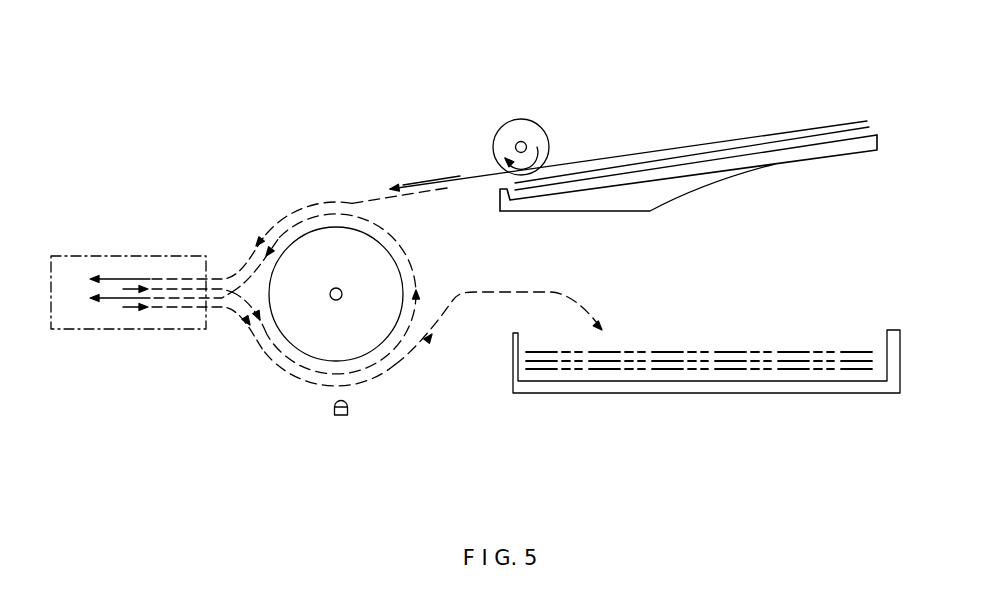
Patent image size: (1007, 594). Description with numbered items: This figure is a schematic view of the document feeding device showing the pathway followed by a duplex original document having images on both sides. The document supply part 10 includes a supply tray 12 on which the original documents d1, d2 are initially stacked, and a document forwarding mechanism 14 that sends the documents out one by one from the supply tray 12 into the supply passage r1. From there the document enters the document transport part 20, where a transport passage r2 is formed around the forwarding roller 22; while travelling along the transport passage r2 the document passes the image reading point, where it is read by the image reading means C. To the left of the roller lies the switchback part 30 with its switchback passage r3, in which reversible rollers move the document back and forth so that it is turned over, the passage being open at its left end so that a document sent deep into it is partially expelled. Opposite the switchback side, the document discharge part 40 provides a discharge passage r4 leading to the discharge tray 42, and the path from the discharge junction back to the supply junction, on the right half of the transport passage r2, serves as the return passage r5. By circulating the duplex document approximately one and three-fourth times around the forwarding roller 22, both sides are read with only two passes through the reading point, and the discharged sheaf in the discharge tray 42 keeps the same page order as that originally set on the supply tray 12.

The document supply part 10 is at (642, 122).
The supply tray 12 is at (722, 172).
The document forwarding mechanism 14 is at (532, 138).
The document transport part 20 is at (250, 192).
The forwarding roller 22 is at (362, 340).
The switchback part 30 is at (70, 256).
The document discharge part 40 is at (697, 302).
The discharge tray 42 is at (675, 387).
The image reading means C is at (335, 410).
The supply passage r1 is at (340, 200).
The transport passage r2 is at (262, 352).
The switchback passage r3 is at (170, 278).
The discharge passage r4 is at (553, 292).
The return passage r5 is at (411, 241).
The original document d1 is at (715, 140).
The original document d2 is at (820, 130).